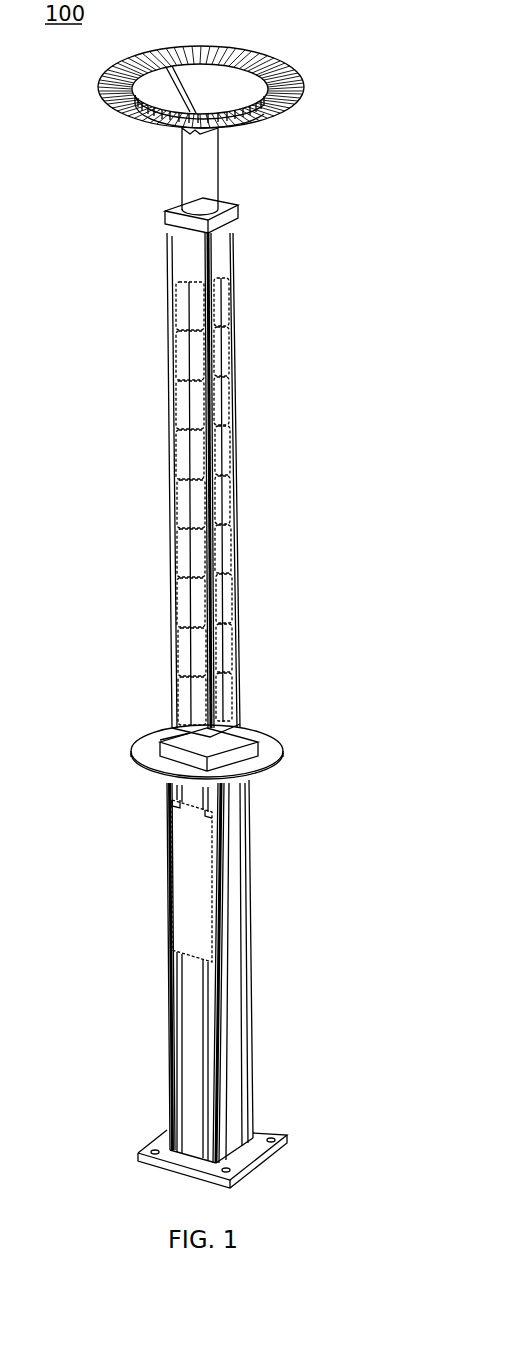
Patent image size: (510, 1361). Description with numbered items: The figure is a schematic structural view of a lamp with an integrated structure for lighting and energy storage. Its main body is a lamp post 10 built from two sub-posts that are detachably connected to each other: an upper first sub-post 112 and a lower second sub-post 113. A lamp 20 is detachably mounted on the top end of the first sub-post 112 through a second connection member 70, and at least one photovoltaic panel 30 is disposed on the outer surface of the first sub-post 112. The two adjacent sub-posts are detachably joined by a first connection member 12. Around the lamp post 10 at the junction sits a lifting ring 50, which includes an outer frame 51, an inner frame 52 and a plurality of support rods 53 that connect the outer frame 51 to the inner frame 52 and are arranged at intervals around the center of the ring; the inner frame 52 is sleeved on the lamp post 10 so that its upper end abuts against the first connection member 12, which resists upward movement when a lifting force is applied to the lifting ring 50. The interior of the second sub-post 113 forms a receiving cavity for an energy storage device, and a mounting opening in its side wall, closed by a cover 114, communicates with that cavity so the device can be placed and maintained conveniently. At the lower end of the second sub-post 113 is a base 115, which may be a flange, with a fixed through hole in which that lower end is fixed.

The lamp post 10 is at (112, 614).
The first connection member 12 is at (160, 740).
The lamp 20 is at (207, 165).
The photovoltaic panel 30 is at (238, 485).
The lifting ring 50 is at (253, 770).
The outer frame 51 is at (268, 764).
The inner frame 52 is at (338, 740).
The support rods 53 is at (262, 746).
The second connection member 70 is at (232, 211).
The first sub-post 112 is at (218, 254).
The second sub-post 113 is at (228, 975).
The cover 114 is at (190, 910).
The base 115 is at (262, 1148).